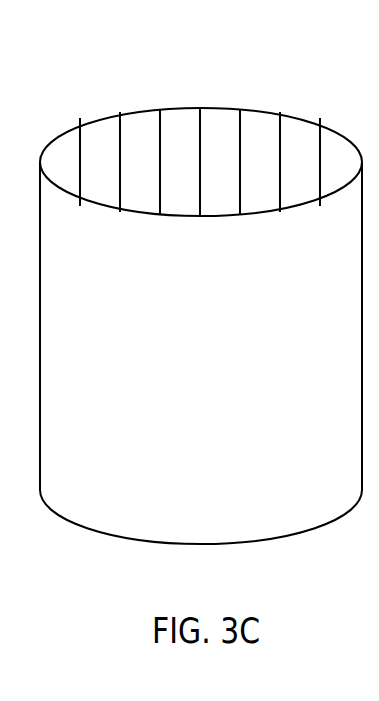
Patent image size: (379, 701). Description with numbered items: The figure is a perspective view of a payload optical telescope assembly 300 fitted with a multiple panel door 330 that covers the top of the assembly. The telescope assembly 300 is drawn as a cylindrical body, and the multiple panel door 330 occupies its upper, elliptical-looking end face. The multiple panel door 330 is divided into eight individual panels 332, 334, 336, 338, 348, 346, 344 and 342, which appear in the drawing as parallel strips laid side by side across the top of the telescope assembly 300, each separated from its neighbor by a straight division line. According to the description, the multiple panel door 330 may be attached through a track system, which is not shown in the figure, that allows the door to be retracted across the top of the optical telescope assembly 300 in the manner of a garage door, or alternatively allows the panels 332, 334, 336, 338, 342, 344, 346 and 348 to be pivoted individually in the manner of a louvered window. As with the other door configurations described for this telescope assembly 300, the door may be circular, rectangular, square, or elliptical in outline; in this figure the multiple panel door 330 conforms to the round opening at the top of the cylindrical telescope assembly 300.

The telescope assembly 300 is at (317, 526).
The multiple panel door 330 is at (360, 91).
The panel 332 is at (58, 180).
The panel 334 is at (100, 200).
The panel 336 is at (140, 204).
The panel 338 is at (178, 210).
The panel 342 is at (342, 180).
The panel 344 is at (302, 198).
The panel 346 is at (263, 203).
The panel 348 is at (220, 211).